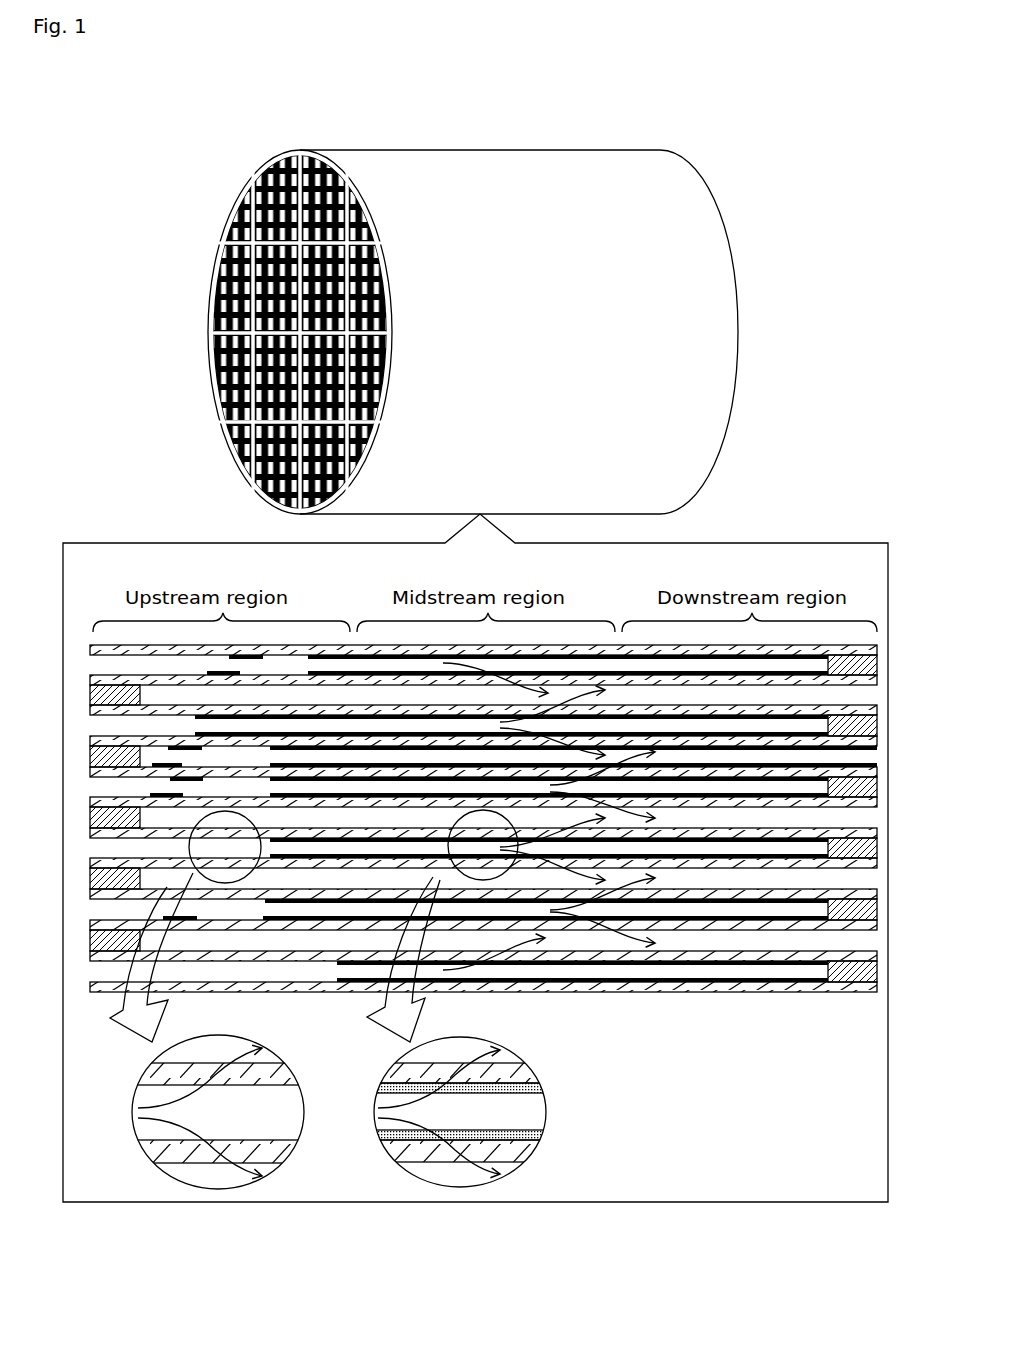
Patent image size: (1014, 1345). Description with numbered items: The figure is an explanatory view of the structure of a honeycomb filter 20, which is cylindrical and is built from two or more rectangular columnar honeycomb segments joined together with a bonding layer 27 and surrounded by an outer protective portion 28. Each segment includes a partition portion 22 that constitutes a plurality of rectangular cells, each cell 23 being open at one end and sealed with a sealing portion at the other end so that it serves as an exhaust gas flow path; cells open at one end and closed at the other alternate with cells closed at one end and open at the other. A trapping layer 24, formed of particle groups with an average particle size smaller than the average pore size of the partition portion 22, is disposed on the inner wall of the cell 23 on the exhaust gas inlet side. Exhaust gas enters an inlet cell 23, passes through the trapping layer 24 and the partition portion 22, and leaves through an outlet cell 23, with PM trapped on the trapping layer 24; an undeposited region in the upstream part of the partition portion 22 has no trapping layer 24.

The honeycomb filter 20 is at (436, 308).
The partition portion 22 is at (312, 993).
The cell 23 is at (549, 816).
The trapping layer 24 is at (343, 983).
The bonding layer 27 is at (262, 319).
The outer protective portion 28 is at (240, 190).